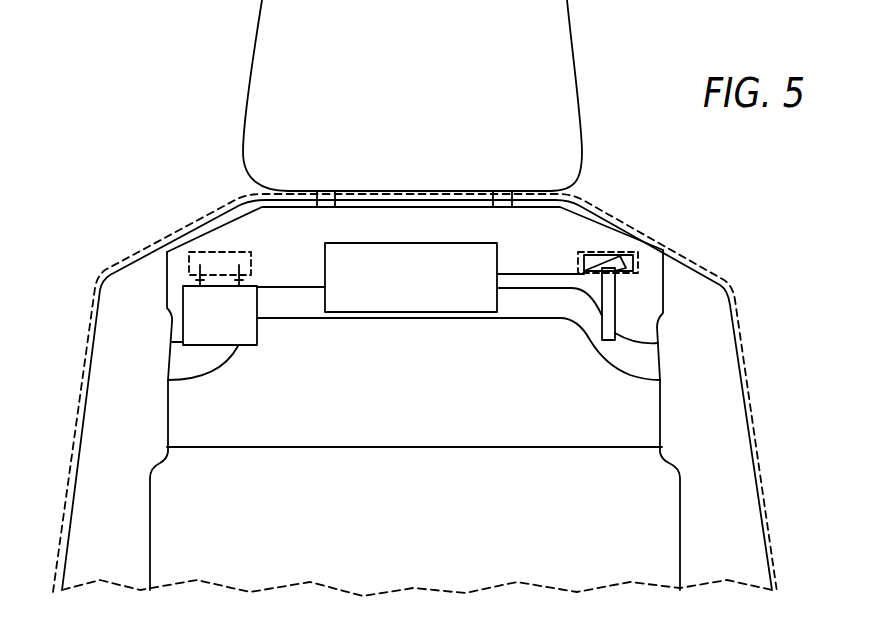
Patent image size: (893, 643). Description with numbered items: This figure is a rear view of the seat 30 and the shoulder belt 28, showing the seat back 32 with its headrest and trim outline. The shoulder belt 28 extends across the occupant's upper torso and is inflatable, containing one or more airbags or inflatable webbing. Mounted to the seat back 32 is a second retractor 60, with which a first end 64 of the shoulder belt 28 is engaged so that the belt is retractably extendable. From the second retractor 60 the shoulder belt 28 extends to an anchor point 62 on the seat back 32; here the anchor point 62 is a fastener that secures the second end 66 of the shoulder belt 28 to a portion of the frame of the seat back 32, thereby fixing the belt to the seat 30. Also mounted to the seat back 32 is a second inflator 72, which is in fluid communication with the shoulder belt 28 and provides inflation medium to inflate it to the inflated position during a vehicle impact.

The seat 30 is at (155, 178).
The seat back 32 is at (117, 375).
The shoulder belt 28 is at (240, 280).
The second retractor 60 is at (247, 337).
The anchor point 62 is at (615, 282).
The first end 64 is at (200, 282).
The second end 66 is at (637, 260).
The second inflator 72 is at (453, 303).